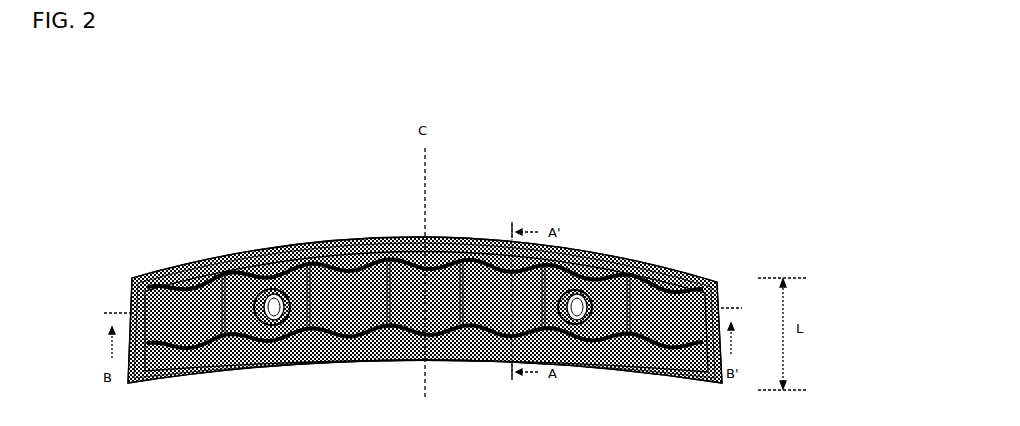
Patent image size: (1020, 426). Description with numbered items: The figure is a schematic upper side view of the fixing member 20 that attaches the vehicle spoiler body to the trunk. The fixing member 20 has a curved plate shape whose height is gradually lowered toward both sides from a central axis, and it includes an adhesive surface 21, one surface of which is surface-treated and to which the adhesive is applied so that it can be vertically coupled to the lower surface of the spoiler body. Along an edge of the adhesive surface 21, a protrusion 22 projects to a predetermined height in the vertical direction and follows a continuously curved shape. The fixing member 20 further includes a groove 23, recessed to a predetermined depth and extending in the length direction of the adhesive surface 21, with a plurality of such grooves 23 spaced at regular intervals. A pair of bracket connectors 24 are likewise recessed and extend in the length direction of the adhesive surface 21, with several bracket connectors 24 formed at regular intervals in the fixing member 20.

The fixing member 20 is at (425, 232).
The adhesive surface 21 is at (445, 278).
The protrusion 22 is at (360, 250).
The groove 23 is at (380, 303).
The bracket connector 24 is at (587, 300).